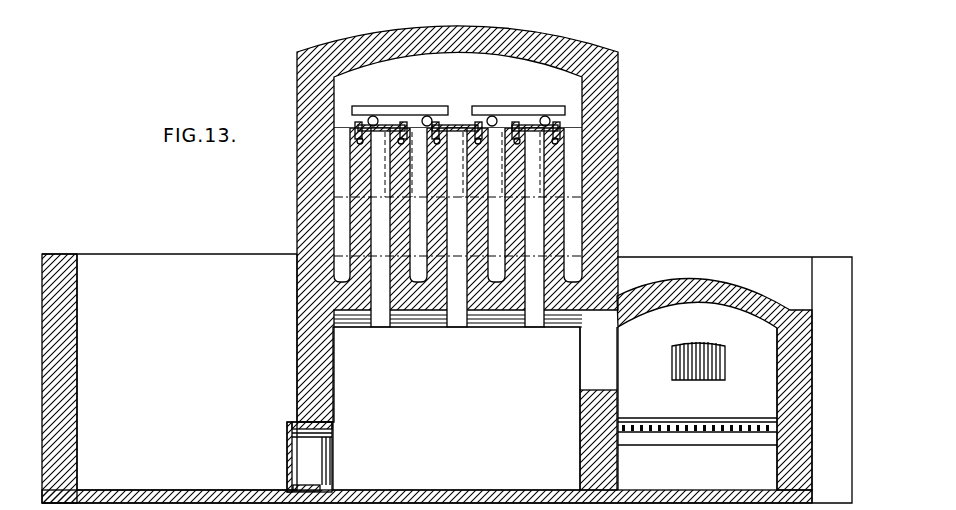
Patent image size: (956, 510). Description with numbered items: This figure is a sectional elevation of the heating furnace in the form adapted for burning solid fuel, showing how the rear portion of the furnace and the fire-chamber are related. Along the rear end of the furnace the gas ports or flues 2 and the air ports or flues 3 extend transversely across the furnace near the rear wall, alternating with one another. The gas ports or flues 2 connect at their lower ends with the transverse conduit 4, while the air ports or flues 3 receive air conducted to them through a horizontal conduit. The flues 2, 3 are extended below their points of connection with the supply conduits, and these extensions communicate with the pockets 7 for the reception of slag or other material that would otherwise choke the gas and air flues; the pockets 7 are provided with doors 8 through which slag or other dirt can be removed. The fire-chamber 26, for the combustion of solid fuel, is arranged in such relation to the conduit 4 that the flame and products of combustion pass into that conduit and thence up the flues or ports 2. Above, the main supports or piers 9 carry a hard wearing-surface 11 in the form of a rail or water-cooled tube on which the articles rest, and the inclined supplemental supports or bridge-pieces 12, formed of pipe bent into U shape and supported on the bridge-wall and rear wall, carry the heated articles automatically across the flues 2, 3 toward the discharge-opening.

The gas ports or flues 2 is at (457, 227).
The air ports or flues 3 is at (458, 205).
The transverse conduit 4 is at (456, 408).
The pockets 7 is at (187, 372).
The doors 8 is at (296, 457).
The main supports or piers 9 is at (353, 112).
The wearing-surface 11 is at (545, 117).
The inclined supplemental supports or bridge-pieces 12 is at (555, 135).
The fire-chamber 26 is at (714, 384).